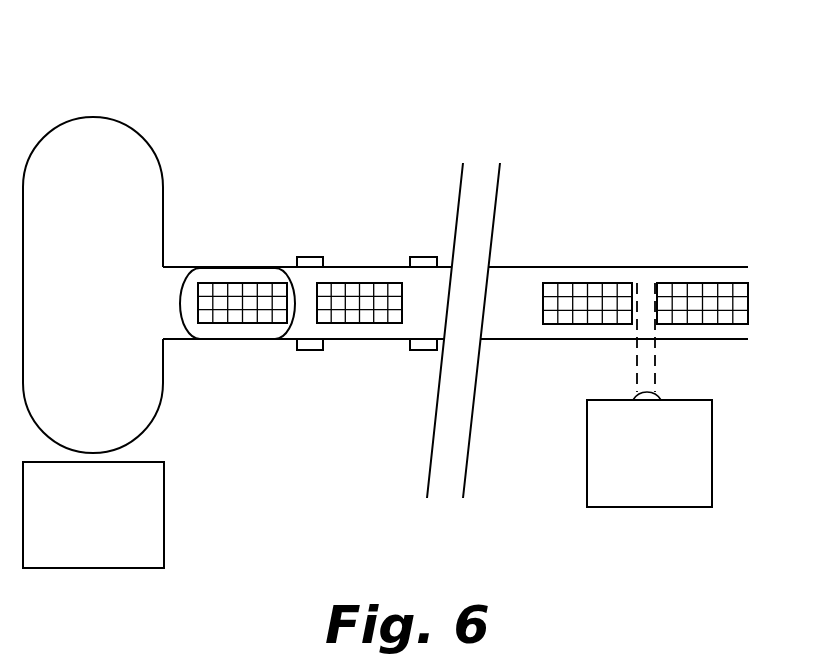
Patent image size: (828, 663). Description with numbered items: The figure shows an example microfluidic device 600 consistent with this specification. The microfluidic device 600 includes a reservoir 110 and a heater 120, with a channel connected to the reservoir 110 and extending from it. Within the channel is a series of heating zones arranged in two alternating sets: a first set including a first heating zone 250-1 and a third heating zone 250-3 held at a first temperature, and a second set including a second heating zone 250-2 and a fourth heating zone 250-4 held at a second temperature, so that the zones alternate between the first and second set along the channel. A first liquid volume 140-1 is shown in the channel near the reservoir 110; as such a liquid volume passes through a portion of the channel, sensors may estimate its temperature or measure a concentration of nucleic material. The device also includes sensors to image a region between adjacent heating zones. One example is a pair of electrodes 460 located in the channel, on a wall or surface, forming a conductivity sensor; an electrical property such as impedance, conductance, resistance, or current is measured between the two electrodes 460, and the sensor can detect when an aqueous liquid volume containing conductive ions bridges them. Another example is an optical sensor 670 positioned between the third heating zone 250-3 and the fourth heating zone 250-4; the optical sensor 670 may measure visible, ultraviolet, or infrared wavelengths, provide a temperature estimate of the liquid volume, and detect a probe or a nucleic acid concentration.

The microfluidic device 600 is at (121, 77).
The reservoir 110 is at (72, 234).
The heater 120 is at (70, 544).
The first liquid volume 140-1 is at (235, 350).
The first heating zone 250-1 is at (243, 302).
The second heating zone 250-2 is at (358, 308).
The third heating zone 250-3 is at (588, 307).
The fourth heating zone 250-4 is at (703, 285).
The electrodes 460 is at (315, 324).
The optical sensor 670 is at (649, 395).